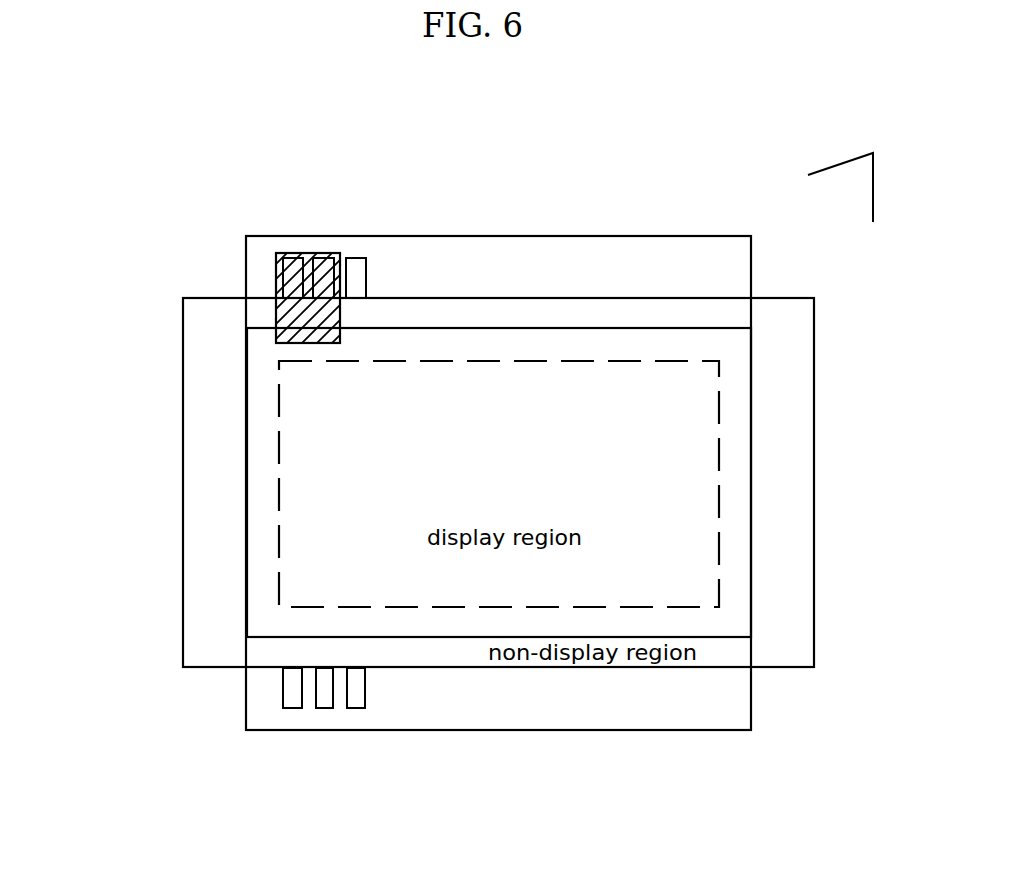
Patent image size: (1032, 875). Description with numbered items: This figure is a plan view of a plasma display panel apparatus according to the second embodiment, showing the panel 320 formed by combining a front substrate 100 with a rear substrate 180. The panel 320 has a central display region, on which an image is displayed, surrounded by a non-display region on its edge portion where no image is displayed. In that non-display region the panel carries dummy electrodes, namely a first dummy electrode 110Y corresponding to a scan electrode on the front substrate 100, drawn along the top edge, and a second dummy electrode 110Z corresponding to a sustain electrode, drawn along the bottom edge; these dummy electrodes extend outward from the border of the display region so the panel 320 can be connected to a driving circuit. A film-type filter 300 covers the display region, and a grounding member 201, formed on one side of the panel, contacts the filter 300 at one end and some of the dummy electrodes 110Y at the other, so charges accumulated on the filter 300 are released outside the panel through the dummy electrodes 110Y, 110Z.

The front substrate 100 is at (803, 312).
The rear substrate 180 is at (743, 238).
The grounding member 201 is at (281, 306).
The film-type filter 300 is at (272, 542).
The panel 320 is at (859, 171).
The first dummy electrode 110Y is at (292, 257).
The second dummy electrode 110Z is at (297, 702).